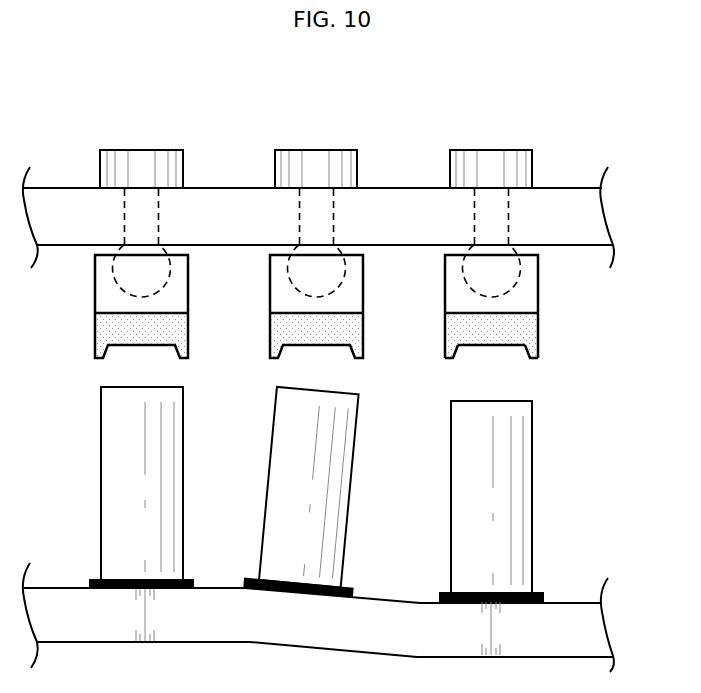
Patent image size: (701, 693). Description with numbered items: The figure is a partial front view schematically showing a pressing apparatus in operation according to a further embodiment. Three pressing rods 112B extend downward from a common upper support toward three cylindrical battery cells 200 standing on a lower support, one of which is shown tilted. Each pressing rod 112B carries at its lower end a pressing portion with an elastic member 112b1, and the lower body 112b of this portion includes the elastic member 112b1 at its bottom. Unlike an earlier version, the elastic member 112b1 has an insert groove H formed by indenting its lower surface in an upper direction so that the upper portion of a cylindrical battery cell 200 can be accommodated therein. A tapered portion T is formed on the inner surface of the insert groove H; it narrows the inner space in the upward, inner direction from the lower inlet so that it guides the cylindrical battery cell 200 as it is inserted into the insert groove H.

The pressing rod 112B is at (135, 133).
The connection member 112b is at (525, 316).
The elastic member 112b1 is at (538, 327).
The tapered portion T is at (455, 358).
The insert groove H is at (492, 346).
The cylindrical battery cell 200 is at (552, 484).